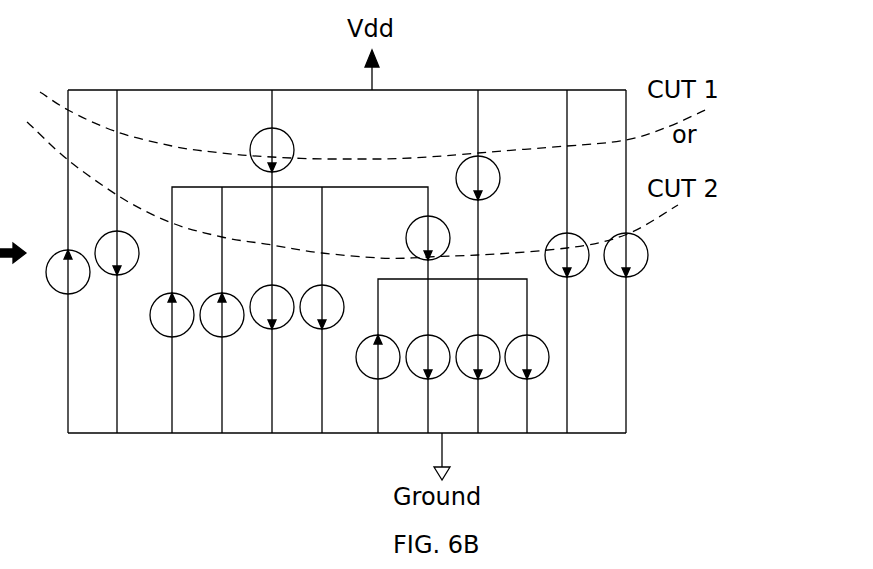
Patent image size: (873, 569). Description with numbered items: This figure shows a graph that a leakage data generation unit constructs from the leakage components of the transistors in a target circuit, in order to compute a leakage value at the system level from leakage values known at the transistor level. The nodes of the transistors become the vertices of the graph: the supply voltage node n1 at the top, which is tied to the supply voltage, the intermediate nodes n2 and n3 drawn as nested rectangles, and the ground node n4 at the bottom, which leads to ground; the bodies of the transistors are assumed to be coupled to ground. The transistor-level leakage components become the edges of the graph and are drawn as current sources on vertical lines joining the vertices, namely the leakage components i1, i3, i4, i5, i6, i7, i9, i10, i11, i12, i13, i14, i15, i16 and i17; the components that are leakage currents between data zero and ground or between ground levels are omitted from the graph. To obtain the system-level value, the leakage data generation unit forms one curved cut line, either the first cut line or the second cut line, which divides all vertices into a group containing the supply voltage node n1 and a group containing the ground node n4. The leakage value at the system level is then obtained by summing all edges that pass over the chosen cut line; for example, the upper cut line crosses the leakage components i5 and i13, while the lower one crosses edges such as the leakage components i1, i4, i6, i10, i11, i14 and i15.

The leakage component i1 is at (61, 262).
The leakage component i3 is at (172, 306).
The leakage component i4 is at (111, 245).
The leakage component i5 is at (272, 141).
The leakage component i6 is at (272, 298).
The leakage component i7 is at (222, 306).
The leakage component i9 is at (371, 370).
The leakage component i10 is at (325, 298).
The leakage component i11 is at (434, 229).
The leakage component i12 is at (418, 370).
The leakage component i13 is at (484, 166).
The leakage component i14 is at (558, 246).
The leakage component i15 is at (615, 246).
The leakage component i16 is at (469, 370).
The leakage component i17 is at (518, 370).
The supply voltage node n1 is at (345, 92).
The node n2 is at (295, 188).
The node n3 is at (448, 281).
The ground node n4 is at (252, 433).